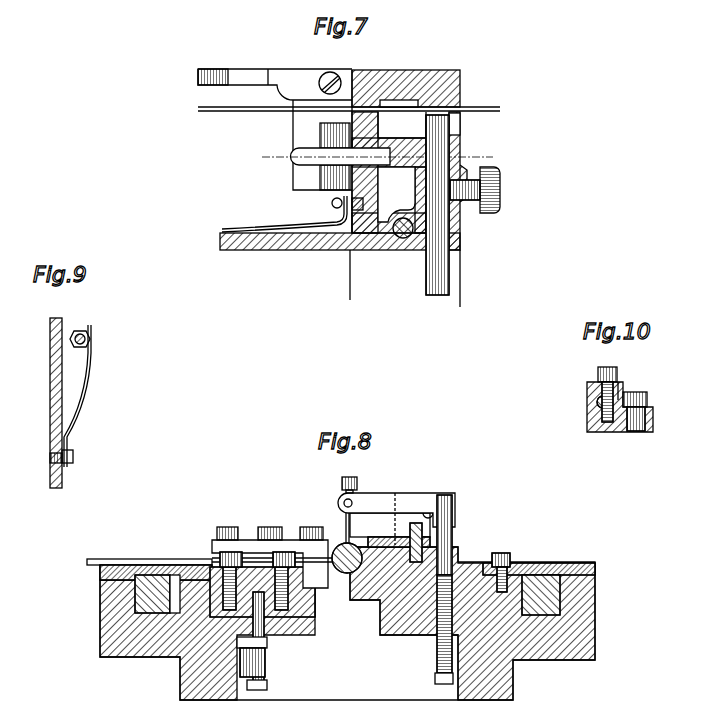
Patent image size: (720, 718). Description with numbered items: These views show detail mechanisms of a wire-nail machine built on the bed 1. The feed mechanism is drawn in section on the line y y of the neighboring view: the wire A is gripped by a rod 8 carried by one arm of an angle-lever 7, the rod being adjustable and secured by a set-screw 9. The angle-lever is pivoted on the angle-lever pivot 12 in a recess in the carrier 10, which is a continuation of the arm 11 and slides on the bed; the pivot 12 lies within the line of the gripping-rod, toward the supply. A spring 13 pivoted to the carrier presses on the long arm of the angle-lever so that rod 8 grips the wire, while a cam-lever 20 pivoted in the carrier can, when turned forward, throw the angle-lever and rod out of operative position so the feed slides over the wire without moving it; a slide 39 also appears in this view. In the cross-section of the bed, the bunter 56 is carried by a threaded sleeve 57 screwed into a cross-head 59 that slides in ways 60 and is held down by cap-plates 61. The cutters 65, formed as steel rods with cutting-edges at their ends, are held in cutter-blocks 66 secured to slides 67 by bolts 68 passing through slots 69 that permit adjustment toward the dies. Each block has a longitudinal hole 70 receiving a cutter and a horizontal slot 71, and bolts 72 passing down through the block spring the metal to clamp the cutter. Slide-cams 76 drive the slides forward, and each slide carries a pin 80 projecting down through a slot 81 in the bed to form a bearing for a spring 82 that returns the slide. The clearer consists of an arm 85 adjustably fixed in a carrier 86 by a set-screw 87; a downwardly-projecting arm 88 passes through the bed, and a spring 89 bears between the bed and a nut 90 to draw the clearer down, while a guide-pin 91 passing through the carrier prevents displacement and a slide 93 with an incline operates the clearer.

In FIG. 9, the bed 1 is at (52, 380).
In FIG. 8, the bed 1 is at (182, 676).
In FIG. 7, the angle-lever 7 is at (348, 243).
In FIG. 7, the rod 8 is at (450, 268).
In FIG. 7, the set-screw 9 is at (495, 184).
In FIG. 7, the carrier 10 is at (404, 71).
In FIG. 7, the arm 11 is at (402, 286).
In FIG. 7, the angle-lever pivot 12 is at (398, 240).
In FIG. 7, the spring 13 is at (306, 224).
In FIG. 7, the cam-lever 20 is at (314, 150).
In FIG. 7, the slide bar 39 is at (275, 129).
In FIG. 7, the wire A is at (246, 113).
In FIG. 7, the section line y y is at (375, 156).
In FIG. 8, the bunter 56 is at (343, 573).
In FIG. 8, the sleeve 57 is at (340, 549).
In FIG. 8, the cross-head 59 is at (390, 525).
In FIG. 8, the ways 60 is at (357, 601).
In FIG. 8, the cap-plates 61 is at (399, 534).
In FIG. 10, the cutters 65 is at (597, 402).
In FIG. 8, the cutters 65 is at (190, 562).
In FIG. 10, the cutter-blocks 66 is at (620, 416).
In FIG. 8, the cutter-blocks 66 is at (212, 548).
In FIG. 8, the slides 67 is at (312, 605).
In FIG. 10, the bolts 68 is at (647, 398).
In FIG. 8, the bolts 68 is at (240, 554).
In FIG. 10, the slots 69 is at (652, 422).
In FIG. 10, the longitudinal hole 70 is at (588, 416).
In FIG. 10, the horizontal slot 71 is at (622, 398).
In FIG. 8, the horizontal slot 71 is at (300, 566).
In FIG. 10, the bolts 72 is at (600, 369).
In FIG. 8, the bolts 72 is at (224, 529).
In FIG. 8, the slide-cams 76 is at (155, 583).
In FIG. 9, the pin 80 is at (90, 340).
In FIG. 8, the pin 80 is at (265, 645).
In FIG. 8, the slot 81 is at (266, 637).
In FIG. 9, the spring 82 is at (77, 395).
In FIG. 8, the spring 82 is at (266, 665).
In FIG. 8, the arm 85 is at (346, 520).
In FIG. 8, the carrier 86 is at (396, 510).
In FIG. 8, the set-screw 87 is at (356, 482).
In FIG. 8, the downwardly-projecting arm 88 is at (452, 534).
In FIG. 8, the spring 89 is at (437, 653).
In FIG. 8, the nut 90 is at (443, 685).
In FIG. 8, the guide-pin 91 is at (397, 494).
In FIG. 8, the slide 93 is at (416, 522).